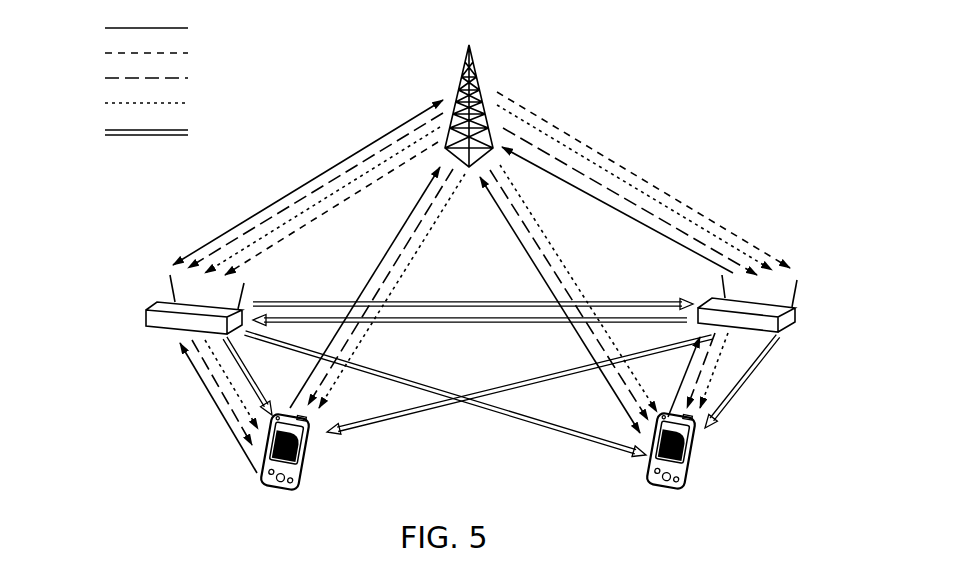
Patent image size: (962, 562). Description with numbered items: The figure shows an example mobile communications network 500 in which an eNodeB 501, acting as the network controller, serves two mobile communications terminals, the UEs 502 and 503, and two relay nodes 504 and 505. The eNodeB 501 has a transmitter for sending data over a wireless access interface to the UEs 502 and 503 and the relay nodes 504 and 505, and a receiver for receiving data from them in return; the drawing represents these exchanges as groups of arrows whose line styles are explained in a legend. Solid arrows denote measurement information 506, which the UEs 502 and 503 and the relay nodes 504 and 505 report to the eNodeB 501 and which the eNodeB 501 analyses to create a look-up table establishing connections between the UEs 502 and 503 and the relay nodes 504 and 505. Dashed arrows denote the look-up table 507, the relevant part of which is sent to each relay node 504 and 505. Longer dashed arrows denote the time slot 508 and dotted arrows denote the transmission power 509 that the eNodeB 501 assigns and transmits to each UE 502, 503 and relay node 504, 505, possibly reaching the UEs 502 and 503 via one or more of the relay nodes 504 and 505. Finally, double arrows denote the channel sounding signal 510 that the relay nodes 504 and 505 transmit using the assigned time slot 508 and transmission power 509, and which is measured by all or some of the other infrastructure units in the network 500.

The mobile communications network 500 is at (728, 103).
The eNodeB 501 is at (477, 76).
The UE 502 is at (303, 507).
The UE 503 is at (692, 507).
The relay node 504 is at (170, 328).
The relay node 505 is at (788, 331).
The measurement information 506 is at (98, 29).
The look-up table 507 is at (98, 54).
The time slot 508 is at (98, 79).
The transmission power 509 is at (98, 104).
The channel sounding signal 510 is at (98, 133).